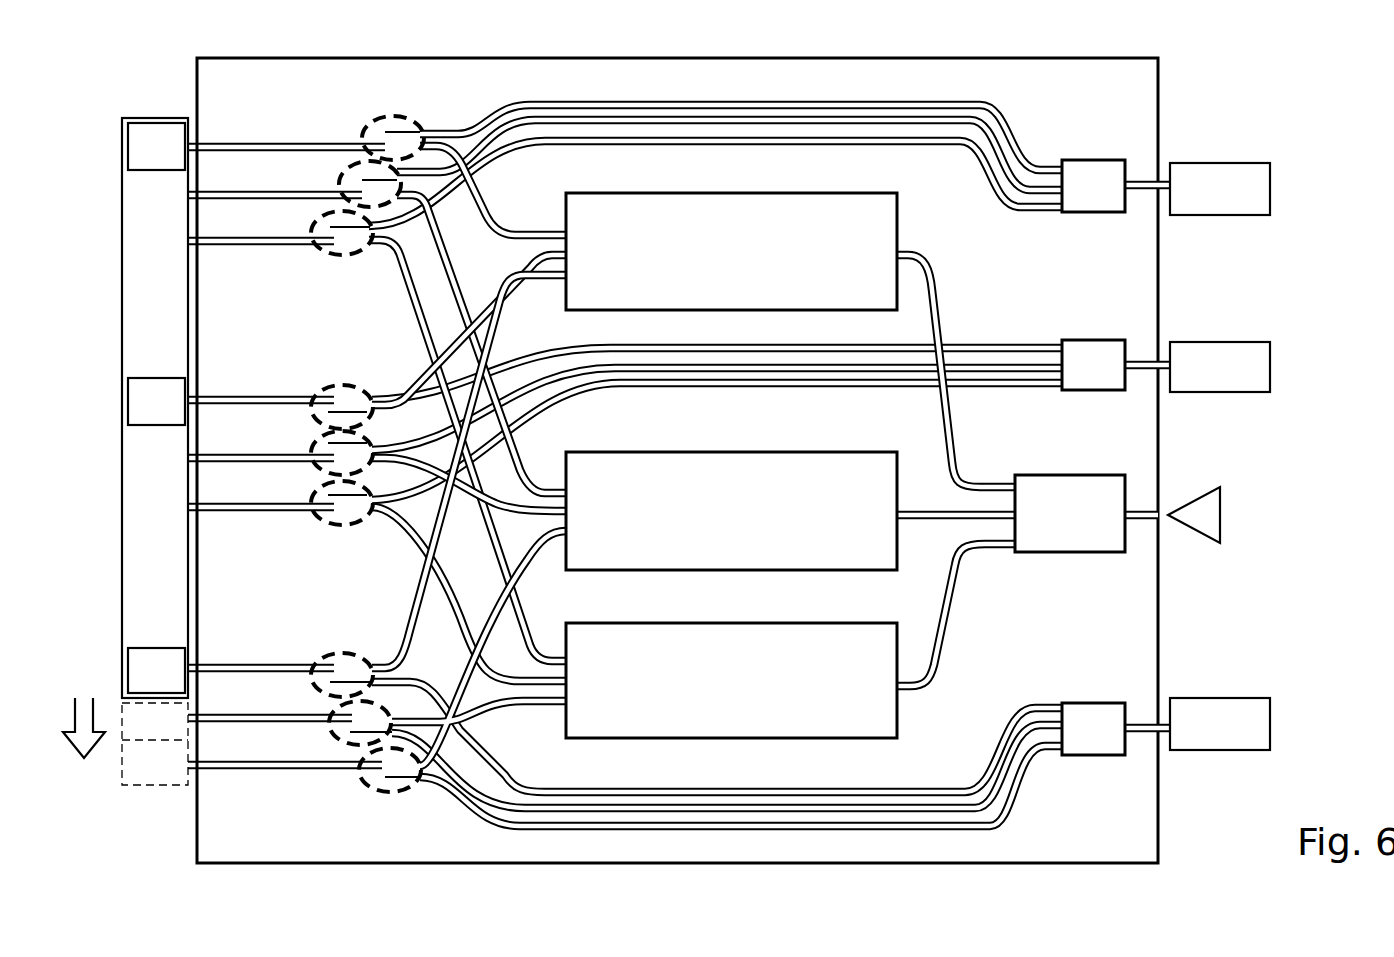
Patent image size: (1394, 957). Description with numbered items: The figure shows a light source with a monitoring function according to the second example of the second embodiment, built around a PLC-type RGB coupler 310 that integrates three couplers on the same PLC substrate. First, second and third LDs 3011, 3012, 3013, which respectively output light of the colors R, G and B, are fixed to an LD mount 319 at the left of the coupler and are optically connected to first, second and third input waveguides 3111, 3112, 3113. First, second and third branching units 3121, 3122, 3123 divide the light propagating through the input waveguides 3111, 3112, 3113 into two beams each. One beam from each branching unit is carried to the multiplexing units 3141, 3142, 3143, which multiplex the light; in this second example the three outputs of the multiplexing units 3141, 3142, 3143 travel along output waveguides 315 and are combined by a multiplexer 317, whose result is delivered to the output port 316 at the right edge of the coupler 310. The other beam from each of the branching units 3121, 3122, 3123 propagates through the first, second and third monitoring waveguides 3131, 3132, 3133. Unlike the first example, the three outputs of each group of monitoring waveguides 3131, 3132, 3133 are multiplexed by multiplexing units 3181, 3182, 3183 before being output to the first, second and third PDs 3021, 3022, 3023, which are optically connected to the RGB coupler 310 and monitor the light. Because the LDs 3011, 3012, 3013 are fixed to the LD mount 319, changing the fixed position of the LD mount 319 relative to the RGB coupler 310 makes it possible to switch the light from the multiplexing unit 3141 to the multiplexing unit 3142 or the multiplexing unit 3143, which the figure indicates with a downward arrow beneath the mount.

The first LD 3011 is at (128, 152).
The second LD 3012 is at (128, 412).
The third LD 3013 is at (128, 682).
The first PD 3021 is at (1270, 188).
The second PD 3022 is at (1270, 368).
The third PD 3023 is at (1270, 723).
The RGB coupler 310 is at (1158, 72).
The first input waveguide 3111 is at (218, 240).
The second input waveguide 3112 is at (222, 507).
The third input waveguide 3113 is at (218, 765).
The first branching unit 3121 is at (300, 243).
The second branching unit 3122 is at (298, 530).
The third branching unit 3123 is at (340, 680).
The first monitoring waveguide 3131 is at (925, 105).
The second monitoring waveguide 3132 is at (985, 383).
The third monitoring waveguide 3133 is at (945, 826).
The multiplexing unit 3141 is at (822, 193).
The multiplexing unit 3142 is at (822, 452).
The multiplexing unit 3143 is at (822, 623).
The output waveguide 315 is at (985, 544).
The output port 316 is at (1220, 515).
The multiplexer 317 is at (1092, 475).
The multiplexing unit 3181 is at (1090, 160).
The multiplexing unit 3182 is at (1090, 340).
The multiplexing unit 3183 is at (1090, 703).
The LD mount 319 is at (122, 298).